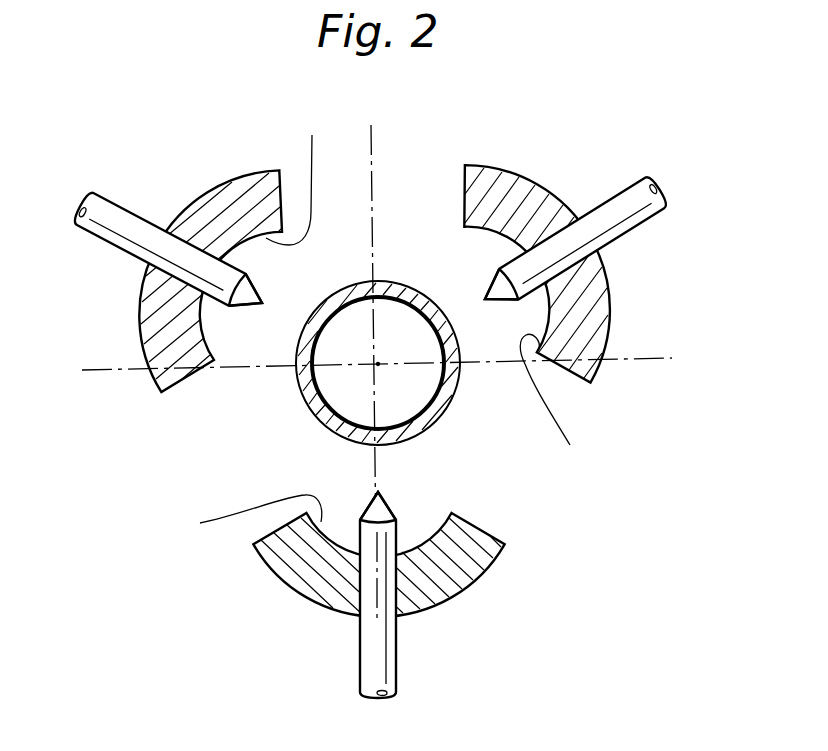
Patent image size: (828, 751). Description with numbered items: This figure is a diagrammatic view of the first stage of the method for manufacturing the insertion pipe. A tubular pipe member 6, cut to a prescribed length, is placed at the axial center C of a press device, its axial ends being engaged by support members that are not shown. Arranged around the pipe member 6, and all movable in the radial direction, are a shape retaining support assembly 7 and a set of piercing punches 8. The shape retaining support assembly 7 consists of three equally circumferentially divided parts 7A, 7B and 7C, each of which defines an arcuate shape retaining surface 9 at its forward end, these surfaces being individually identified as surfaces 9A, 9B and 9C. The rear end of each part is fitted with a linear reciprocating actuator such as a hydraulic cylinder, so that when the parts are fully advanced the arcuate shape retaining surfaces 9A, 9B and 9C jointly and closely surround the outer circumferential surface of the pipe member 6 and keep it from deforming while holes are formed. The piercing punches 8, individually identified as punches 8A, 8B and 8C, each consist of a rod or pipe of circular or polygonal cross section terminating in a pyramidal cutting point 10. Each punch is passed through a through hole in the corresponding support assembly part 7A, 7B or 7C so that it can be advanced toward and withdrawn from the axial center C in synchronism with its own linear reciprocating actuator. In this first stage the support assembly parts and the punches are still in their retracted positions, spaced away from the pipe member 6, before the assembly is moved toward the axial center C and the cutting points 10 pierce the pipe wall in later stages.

The tubular pipe member 6 is at (298, 399).
The shape retaining support assembly 7 is at (343, 385).
The shape retaining support assembly part 7A is at (143, 326).
The shape retaining support assembly part 7B is at (505, 173).
The shape retaining support assembly part 7C is at (438, 592).
The piercing punch 8 is at (420, 419).
The piercing punch 8A is at (123, 212).
The piercing punch 8B is at (630, 223).
The piercing punch 8C is at (365, 650).
The arcuate shape retaining surface 9 is at (373, 317).
The arcuate shape retaining surface 9A is at (313, 165).
The arcuate shape retaining surface 9B is at (578, 409).
The arcuate shape retaining surface 9C is at (216, 521).
The pyramidal cutting point 10 is at (258, 298).
The axial center C is at (378, 365).